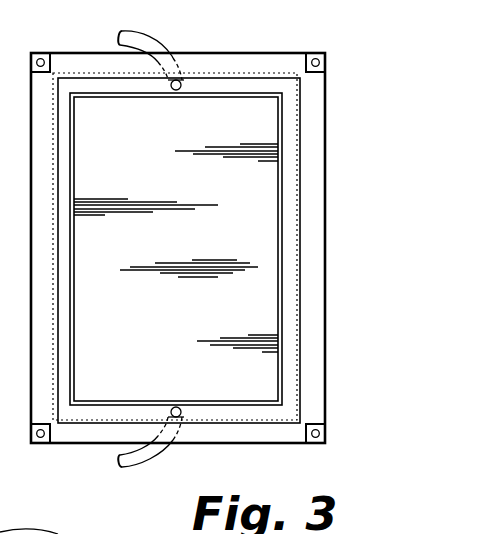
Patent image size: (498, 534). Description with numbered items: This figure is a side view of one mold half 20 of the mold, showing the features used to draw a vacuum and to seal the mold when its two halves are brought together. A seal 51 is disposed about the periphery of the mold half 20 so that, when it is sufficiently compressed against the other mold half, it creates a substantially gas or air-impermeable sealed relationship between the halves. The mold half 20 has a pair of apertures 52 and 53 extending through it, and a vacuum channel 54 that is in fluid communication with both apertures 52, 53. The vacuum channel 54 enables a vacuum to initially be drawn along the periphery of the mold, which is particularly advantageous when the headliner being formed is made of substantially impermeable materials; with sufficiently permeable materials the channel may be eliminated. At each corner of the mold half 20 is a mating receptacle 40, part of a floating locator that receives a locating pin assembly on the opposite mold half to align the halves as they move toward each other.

The mold half 20 is at (325, 232).
The mating receptacle 40 is at (326, 65).
The seal 51 is at (275, 73).
The aperture 52 is at (181, 410).
The aperture 53 is at (181, 88).
The vacuum channel 54 is at (290, 120).